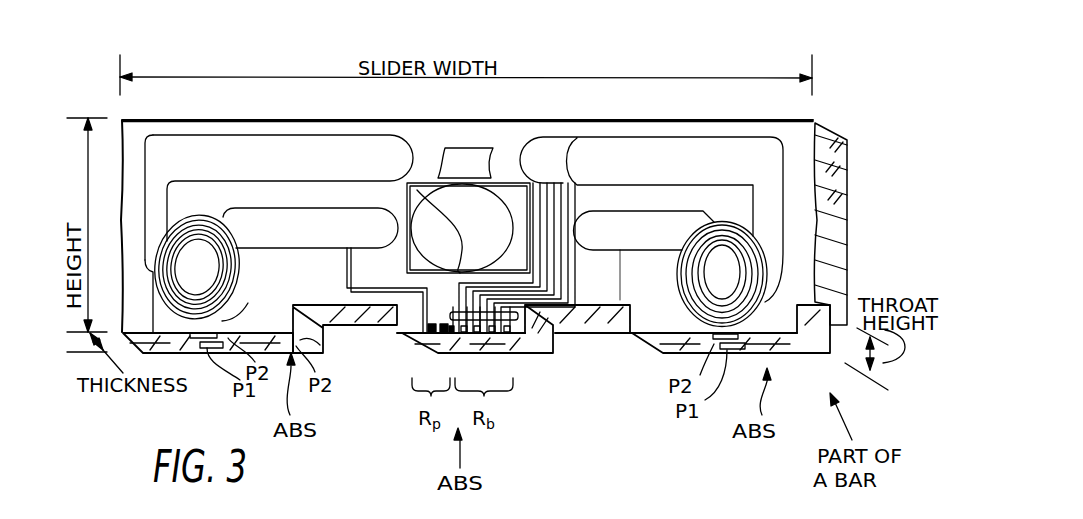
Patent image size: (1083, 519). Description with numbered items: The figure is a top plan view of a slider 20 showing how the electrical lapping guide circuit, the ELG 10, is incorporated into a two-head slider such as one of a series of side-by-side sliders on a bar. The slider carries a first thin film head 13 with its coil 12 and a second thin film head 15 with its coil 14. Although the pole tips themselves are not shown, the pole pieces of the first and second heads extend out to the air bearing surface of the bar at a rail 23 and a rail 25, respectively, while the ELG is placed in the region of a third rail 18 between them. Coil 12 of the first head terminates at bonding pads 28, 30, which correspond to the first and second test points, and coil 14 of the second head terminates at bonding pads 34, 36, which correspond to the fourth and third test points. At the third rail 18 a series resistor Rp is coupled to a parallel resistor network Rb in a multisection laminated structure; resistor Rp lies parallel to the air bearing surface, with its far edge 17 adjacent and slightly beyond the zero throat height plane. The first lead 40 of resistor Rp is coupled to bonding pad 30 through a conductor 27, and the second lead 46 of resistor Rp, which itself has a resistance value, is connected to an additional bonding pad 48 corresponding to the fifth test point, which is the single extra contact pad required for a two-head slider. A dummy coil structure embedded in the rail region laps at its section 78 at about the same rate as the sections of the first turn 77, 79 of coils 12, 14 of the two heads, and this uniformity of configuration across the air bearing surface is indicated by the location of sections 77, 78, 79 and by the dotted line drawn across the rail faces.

The ELG circuit 10 is at (521, 56).
The coil 12 is at (178, 294).
The first thin film head 13 is at (143, 203).
The coil 14 is at (655, 280).
The second thin film head 15 is at (785, 198).
The far edge 17 is at (440, 322).
The third rail 18 is at (410, 293).
The slider 20 is at (390, 118).
The rail 23 is at (322, 340).
The rail 25 is at (622, 240).
The conductor 27 is at (382, 327).
The bonding pad 28 is at (217, 153).
The bonding pad 30 is at (292, 232).
The bonding pad 34 is at (608, 155).
The bonding pad 36 is at (590, 250).
The first lead 40 is at (410, 334).
The second lead 46 is at (417, 188).
The bonding pad 48 is at (487, 207).
The section of first turn 77 is at (224, 318).
The section 78 is at (540, 153).
The section of first turn 79 is at (712, 323).